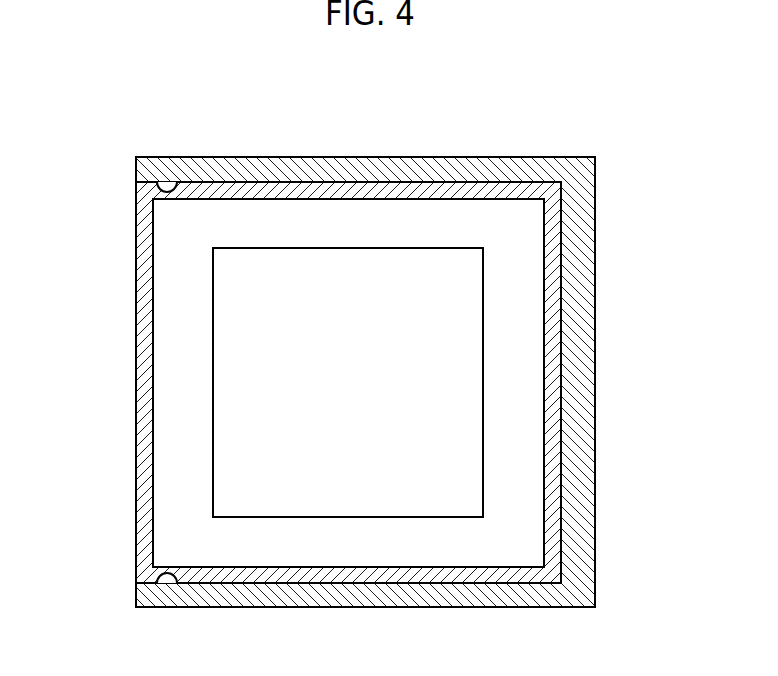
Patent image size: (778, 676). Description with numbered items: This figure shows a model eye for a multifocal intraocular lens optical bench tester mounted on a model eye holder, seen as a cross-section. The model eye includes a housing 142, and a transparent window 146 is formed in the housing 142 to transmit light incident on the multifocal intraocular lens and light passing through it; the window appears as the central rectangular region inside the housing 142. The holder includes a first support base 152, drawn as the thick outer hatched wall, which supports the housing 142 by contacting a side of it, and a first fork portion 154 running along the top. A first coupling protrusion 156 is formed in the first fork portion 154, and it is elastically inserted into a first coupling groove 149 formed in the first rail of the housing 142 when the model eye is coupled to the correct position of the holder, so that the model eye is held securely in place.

The housing 142 is at (137, 328).
The transparent window 146 is at (245, 443).
The first coupling groove 149 is at (165, 200).
The first support base 152 is at (597, 303).
The first fork portion 154 is at (430, 157).
The first coupling protrusion 156 is at (165, 180).